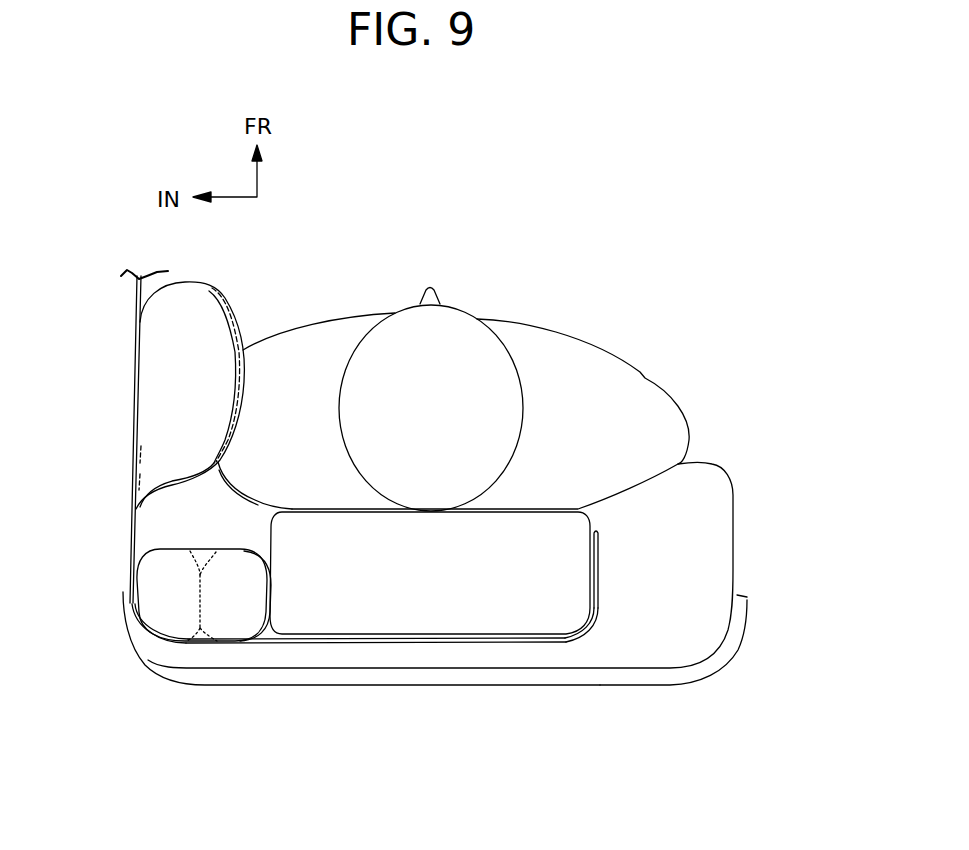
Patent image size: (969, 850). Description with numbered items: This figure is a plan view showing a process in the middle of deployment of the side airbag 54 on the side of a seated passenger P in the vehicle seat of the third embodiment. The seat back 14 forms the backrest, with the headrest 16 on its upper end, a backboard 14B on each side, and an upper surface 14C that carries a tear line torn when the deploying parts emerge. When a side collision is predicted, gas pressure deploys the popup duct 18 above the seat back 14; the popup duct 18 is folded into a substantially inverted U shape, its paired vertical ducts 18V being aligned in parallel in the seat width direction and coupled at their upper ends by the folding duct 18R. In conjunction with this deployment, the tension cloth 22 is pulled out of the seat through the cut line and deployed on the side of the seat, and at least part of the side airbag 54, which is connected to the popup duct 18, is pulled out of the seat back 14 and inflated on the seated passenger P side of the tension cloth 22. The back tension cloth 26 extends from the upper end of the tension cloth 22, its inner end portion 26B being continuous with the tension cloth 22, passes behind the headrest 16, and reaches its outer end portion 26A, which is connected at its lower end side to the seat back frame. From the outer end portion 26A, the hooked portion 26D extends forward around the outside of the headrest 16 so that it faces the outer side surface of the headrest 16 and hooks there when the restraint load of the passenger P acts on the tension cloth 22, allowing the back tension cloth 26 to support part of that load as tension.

The side airbag 54 is at (216, 284).
The seated passenger P is at (532, 301).
The tension cloth 22 is at (130, 445).
The back tension cloth 26 is at (340, 652).
The outer end portion 26A is at (583, 630).
The inner end portion 26B is at (277, 648).
The hooked portion 26D is at (601, 572).
The headrest 16 is at (528, 608).
The seat back 14 is at (426, 700).
The backboard 14B is at (528, 680).
The upper surface 14C is at (462, 652).
The popup duct 18 is at (277, 745).
The folding duct 18R is at (160, 620).
The vertical ducts 18V is at (245, 728).